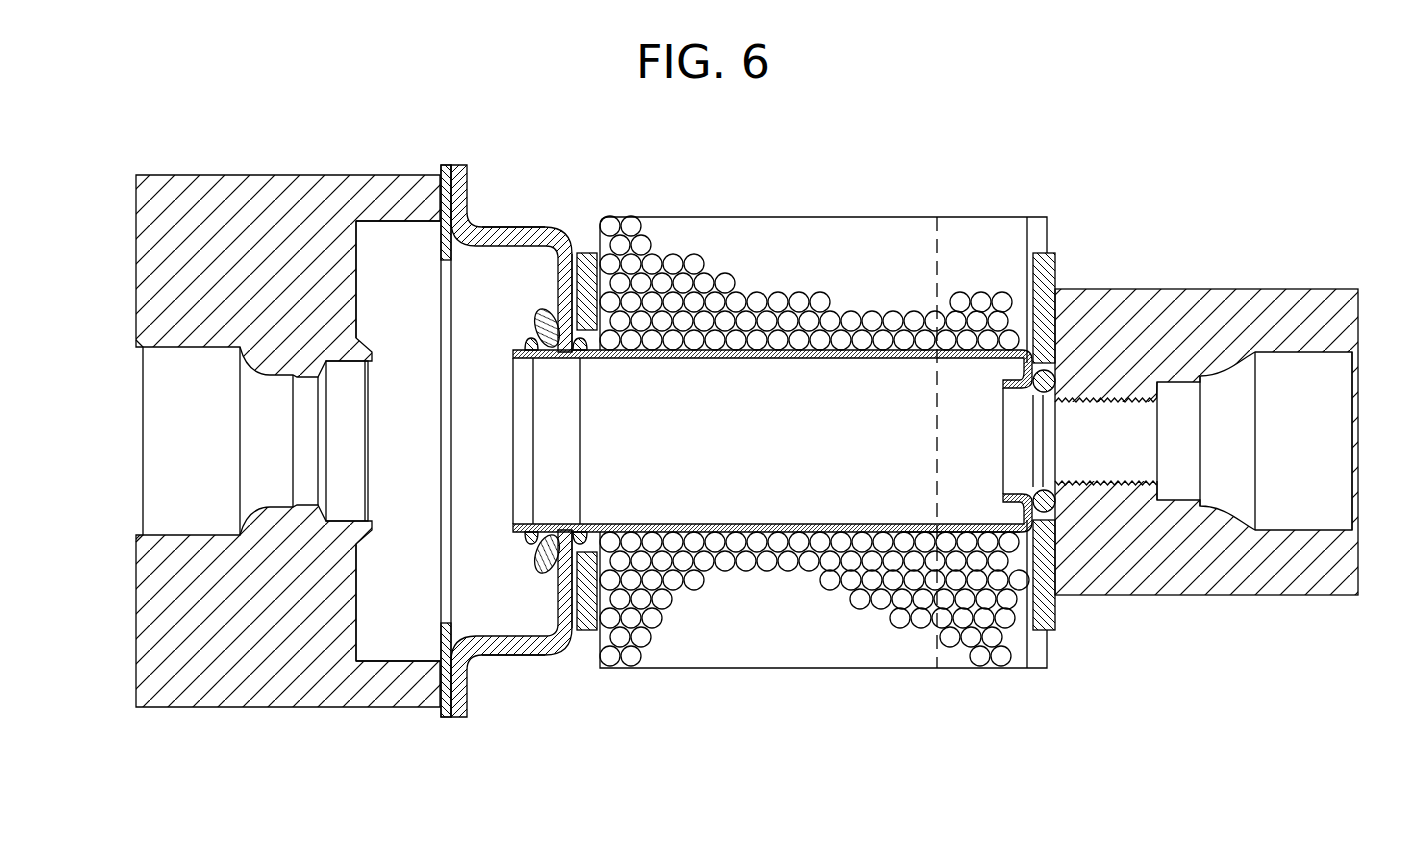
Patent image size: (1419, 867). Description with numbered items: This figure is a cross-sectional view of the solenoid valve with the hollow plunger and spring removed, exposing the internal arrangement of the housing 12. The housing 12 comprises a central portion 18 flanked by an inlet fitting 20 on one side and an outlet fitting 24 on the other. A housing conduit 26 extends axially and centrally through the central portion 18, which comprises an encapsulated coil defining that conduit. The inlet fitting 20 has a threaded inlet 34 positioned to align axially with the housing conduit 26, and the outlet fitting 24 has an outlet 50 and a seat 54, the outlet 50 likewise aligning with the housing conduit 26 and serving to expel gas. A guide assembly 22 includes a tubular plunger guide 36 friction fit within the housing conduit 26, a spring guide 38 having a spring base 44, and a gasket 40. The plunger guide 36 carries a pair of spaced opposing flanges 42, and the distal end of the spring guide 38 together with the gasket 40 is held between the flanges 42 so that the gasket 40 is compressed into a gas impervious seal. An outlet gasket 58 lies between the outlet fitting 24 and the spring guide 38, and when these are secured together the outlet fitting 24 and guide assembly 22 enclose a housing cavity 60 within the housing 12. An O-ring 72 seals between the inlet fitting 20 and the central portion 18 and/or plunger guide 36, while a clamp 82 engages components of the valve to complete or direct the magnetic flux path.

The housing 12 is at (1237, 396).
The central portion 18 is at (820, 184).
The inlet fitting 20 is at (1190, 300).
The guide assembly 22 is at (535, 208).
The outlet fitting 24 is at (288, 192).
The housing conduit 26 is at (956, 532).
The inlet 34 is at (1312, 490).
The plunger guide 36 is at (836, 520).
The spring guide 38 is at (565, 227).
The gasket 40 is at (536, 323).
The flanges 42 is at (591, 517).
The spring base 44 is at (556, 603).
The outlet 50 is at (168, 409).
The seat 54 is at (373, 354).
The outlet gasket 58 is at (444, 719).
The housing cavity 60 is at (401, 627).
The O-ring 72 is at (1062, 520).
The clamp 82 is at (1046, 280).